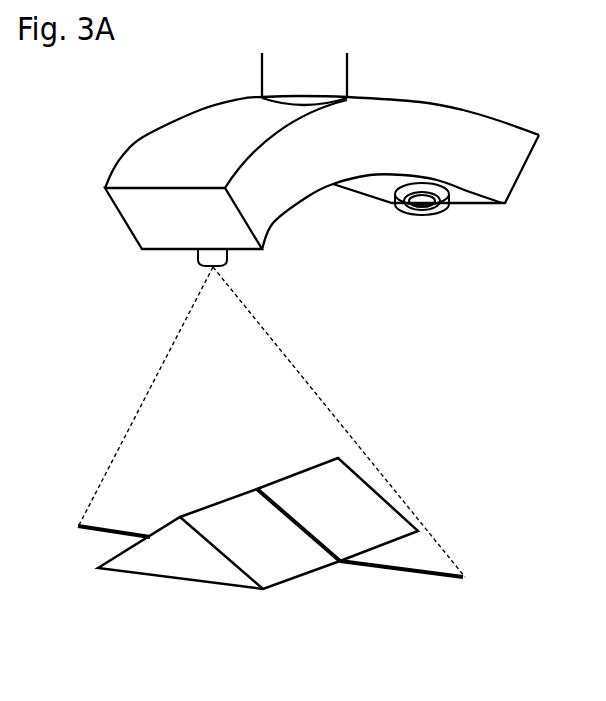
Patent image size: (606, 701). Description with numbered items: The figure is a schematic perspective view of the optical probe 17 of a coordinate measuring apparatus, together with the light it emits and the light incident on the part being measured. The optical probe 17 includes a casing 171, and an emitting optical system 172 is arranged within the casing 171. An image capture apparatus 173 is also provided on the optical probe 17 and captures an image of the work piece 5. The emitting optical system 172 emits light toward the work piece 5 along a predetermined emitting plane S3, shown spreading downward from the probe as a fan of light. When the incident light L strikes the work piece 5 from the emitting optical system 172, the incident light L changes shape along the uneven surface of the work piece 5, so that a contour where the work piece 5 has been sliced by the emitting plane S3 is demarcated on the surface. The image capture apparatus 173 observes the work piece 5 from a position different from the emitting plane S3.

The optical probe 17 is at (508, 95).
The casing 171 is at (155, 155).
The emitting optical system 172 is at (197, 257).
The image capture apparatus 173 is at (453, 212).
The emitting plane S3 is at (287, 377).
The work piece 5 is at (402, 512).
The incident light L is at (112, 528).